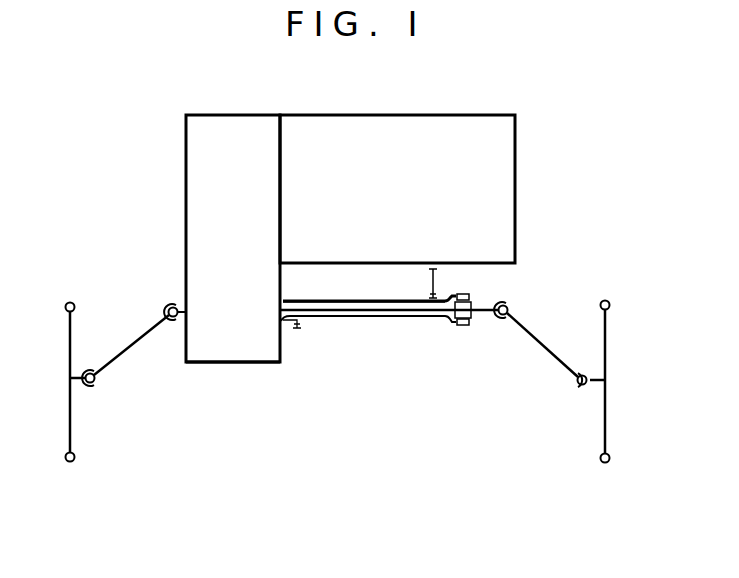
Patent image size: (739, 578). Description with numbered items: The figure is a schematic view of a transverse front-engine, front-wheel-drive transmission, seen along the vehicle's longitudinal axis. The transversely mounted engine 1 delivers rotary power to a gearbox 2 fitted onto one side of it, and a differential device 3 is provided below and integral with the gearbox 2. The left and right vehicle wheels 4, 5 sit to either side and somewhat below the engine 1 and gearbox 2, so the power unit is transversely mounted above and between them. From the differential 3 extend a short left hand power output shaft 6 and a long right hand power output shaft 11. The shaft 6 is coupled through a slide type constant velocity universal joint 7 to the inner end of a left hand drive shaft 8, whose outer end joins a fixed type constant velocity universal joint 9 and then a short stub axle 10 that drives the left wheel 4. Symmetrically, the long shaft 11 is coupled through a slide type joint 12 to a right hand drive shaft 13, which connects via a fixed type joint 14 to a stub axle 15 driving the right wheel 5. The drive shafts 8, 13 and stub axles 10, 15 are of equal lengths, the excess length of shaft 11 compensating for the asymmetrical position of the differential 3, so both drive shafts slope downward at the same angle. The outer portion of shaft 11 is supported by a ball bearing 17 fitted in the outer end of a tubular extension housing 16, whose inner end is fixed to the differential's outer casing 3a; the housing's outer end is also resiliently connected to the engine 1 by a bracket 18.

The engine 1 is at (514, 158).
The gearbox 2 is at (232, 124).
The differential device 3 is at (233, 346).
The outer casing of the differential 3a is at (283, 344).
The left vehicle wheel 4 is at (69, 333).
The right vehicle wheel 5 is at (606, 333).
The short left hand power output shaft 6 is at (178, 300).
The slide type constant velocity universal joint 7 is at (171, 319).
The left hand drive shaft 8 is at (136, 344).
The fixed type constant velocity universal joint 9 is at (97, 385).
The left hand stub axle 10 is at (82, 371).
The long right hand power output shaft 11 is at (348, 317).
The slide type constant velocity universal joint 12 is at (510, 305).
The right hand drive shaft 13 is at (542, 342).
The fixed type constant velocity universal joint 14 is at (577, 388).
The right hand stub axle 15 is at (590, 372).
The extension housing 16 is at (396, 317).
The ball bearing 17 is at (464, 326).
The bracket 18 is at (430, 272).